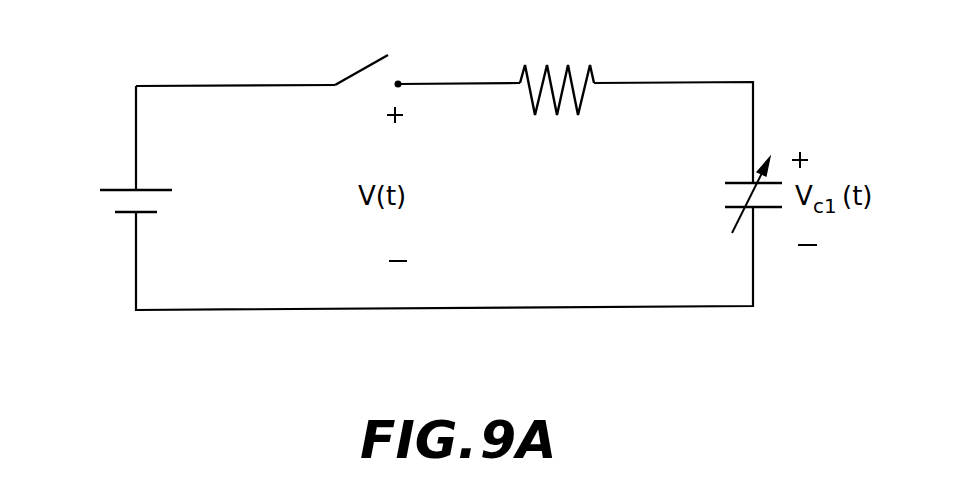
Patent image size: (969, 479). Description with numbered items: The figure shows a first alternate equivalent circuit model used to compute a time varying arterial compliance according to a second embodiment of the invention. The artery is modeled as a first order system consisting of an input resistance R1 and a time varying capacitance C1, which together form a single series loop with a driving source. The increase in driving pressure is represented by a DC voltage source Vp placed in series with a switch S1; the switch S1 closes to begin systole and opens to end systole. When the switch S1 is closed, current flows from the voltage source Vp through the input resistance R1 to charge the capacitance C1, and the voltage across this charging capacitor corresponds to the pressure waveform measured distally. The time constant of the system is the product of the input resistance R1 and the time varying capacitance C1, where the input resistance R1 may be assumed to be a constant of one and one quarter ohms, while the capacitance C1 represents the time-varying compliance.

The switch S1 is at (350, 73).
The input resistance R1 is at (557, 65).
The time varying capacitance C1 is at (700, 195).
The DC voltage source Vp is at (106, 201).